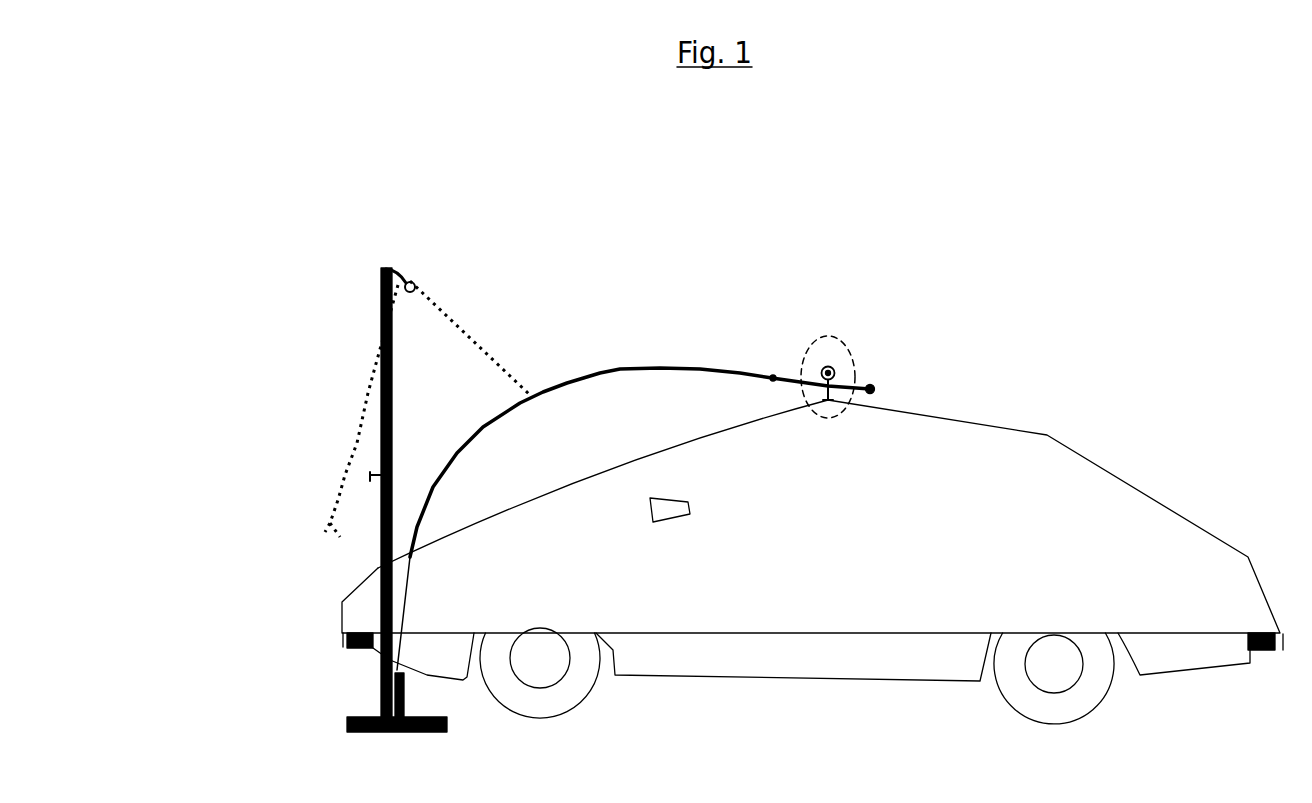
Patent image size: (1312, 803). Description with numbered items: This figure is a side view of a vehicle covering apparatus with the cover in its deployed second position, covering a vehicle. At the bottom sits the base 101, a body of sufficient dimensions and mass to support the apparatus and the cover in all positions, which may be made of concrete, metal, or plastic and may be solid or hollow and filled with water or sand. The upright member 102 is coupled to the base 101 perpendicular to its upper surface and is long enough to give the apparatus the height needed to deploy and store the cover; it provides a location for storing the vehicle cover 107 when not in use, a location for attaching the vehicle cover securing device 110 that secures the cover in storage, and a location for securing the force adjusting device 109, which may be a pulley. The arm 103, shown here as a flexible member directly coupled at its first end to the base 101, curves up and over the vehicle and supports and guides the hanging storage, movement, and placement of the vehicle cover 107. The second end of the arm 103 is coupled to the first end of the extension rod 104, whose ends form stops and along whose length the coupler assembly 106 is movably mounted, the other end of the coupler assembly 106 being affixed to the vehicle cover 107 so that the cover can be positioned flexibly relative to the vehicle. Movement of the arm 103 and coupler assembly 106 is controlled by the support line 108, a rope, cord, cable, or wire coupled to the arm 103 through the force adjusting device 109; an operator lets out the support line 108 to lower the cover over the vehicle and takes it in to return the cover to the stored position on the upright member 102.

The base 101 is at (340, 691).
The upright member 102 is at (332, 497).
The arm 103 is at (636, 468).
The extension rod 104 is at (808, 333).
The coupler assembly 106 is at (872, 342).
The vehicle cover 107 is at (812, 562).
The support line 108 is at (482, 320).
The force adjusting device 109 is at (435, 235).
The vehicle cover securing device 110 is at (325, 411).